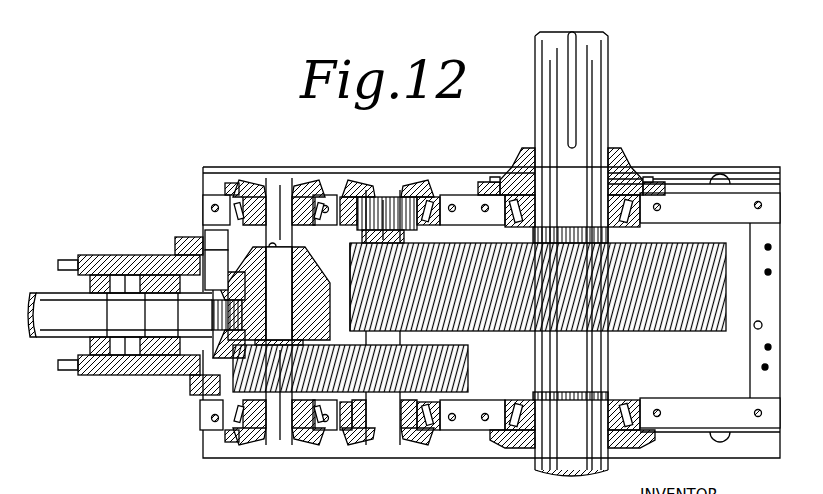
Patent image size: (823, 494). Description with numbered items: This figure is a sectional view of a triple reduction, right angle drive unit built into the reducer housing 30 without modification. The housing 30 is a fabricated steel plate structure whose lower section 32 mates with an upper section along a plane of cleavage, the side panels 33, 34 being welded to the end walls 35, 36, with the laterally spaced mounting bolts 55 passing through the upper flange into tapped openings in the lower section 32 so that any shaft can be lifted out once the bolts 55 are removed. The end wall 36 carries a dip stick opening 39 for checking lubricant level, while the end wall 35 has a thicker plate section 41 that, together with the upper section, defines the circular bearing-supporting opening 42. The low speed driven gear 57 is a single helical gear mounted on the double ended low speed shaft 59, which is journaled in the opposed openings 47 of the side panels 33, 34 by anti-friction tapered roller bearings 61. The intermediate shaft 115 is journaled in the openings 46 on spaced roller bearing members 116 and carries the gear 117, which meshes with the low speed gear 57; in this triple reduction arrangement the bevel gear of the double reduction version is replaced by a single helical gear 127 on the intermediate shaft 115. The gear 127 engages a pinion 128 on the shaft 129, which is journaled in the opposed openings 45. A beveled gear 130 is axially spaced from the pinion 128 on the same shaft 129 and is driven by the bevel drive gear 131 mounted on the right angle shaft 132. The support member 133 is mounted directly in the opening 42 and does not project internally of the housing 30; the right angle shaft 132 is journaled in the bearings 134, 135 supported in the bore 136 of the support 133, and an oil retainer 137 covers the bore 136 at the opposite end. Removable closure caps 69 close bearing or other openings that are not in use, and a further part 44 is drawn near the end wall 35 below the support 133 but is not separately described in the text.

The reducer housing 30 is at (321, 159).
The lower section 32 is at (695, 183).
The side panel 33 is at (742, 196).
The side panel 34 is at (708, 400).
The end wall 35 is at (204, 232).
The end wall 36 is at (764, 347).
The dip stick opening 39 is at (753, 325).
The thicker plate section 41 is at (228, 245).
The bearing-supporting opening 42 is at (228, 260).
The flange 44 is at (190, 385).
The bearing openings 45 is at (226, 428).
The bearing openings 46 is at (470, 405).
The bearing openings 47 is at (642, 400).
The mounting bolts 55 is at (685, 414).
The low speed driven gear 57 is at (722, 245).
The low speed shaft 59 is at (609, 82).
The tapered roller bearings 61 is at (618, 400).
The removable closure caps 69 is at (367, 450).
The intermediate shaft 115 is at (400, 198).
The bearing members 116 is at (428, 432).
The gear 117 is at (350, 306).
The single helical gear 127 is at (470, 370).
The pinion 128 is at (232, 375).
The shaft 129 is at (286, 318).
The beveled gear 130 is at (303, 275).
The bevel drive gear 131 is at (280, 326).
The right angle shaft 132 is at (158, 345).
The support member 133 is at (107, 257).
The bearing 134 is at (115, 358).
The bearing 135 is at (165, 258).
The bore 136 is at (150, 358).
The oil retainer 137 is at (56, 352).